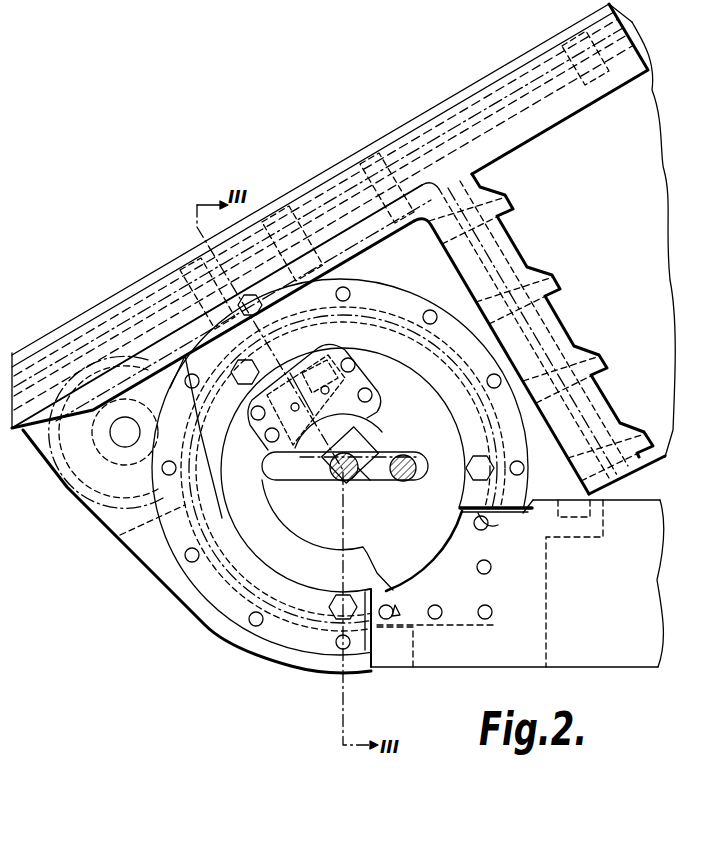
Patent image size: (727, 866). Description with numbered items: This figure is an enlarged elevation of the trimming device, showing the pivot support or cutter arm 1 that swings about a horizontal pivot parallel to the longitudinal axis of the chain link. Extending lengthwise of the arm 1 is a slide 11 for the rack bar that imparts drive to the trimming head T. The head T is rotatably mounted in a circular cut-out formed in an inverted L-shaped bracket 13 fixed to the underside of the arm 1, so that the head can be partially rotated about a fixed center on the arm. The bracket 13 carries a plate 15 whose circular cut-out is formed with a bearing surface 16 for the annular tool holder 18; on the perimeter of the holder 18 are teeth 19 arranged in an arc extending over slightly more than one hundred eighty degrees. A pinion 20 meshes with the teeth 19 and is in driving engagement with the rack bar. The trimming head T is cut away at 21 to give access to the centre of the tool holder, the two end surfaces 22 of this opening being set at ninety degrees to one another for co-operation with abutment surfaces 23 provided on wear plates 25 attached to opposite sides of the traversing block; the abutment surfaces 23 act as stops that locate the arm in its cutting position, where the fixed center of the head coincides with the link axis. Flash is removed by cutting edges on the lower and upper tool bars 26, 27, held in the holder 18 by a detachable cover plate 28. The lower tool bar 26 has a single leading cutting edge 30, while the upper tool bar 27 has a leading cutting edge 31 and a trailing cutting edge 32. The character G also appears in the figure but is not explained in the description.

The pivot support or cutter arm 1 is at (614, 288).
The slide 11 is at (193, 267).
The inverted L-shaped bracket 13 is at (505, 266).
The plate 15 is at (440, 288).
The bearing surface 16 is at (520, 511).
The annular tool holder 18 is at (272, 550).
The teeth 19 is at (230, 478).
The pinion 20 is at (97, 503).
The cut away 21 is at (395, 545).
The end surfaces 22 is at (373, 657).
The abutment surfaces 23 is at (536, 497).
The wear plates 25 is at (620, 653).
The lower tool bar 26 is at (318, 455).
The upper tool bar 27 is at (378, 446).
The detachable cover plate 28 is at (377, 388).
The leading cutting edge 30 is at (343, 478).
The leading cutting edge 31 is at (392, 480).
The trailing cutting edge 32 is at (370, 481).
The guide G is at (396, 452).
The trimming head T is at (416, 575).